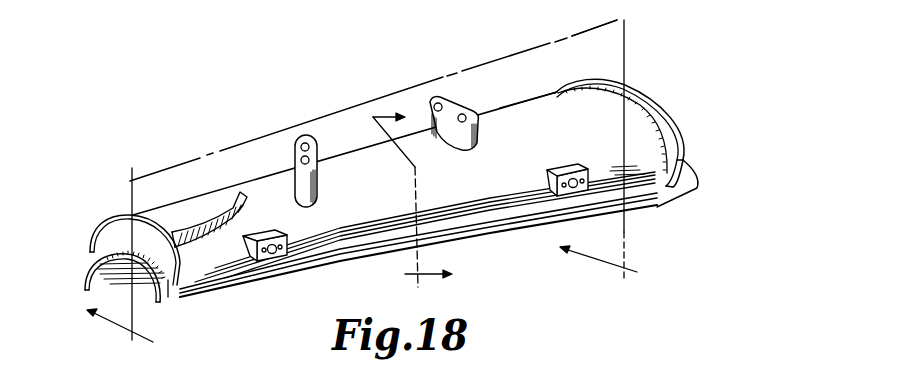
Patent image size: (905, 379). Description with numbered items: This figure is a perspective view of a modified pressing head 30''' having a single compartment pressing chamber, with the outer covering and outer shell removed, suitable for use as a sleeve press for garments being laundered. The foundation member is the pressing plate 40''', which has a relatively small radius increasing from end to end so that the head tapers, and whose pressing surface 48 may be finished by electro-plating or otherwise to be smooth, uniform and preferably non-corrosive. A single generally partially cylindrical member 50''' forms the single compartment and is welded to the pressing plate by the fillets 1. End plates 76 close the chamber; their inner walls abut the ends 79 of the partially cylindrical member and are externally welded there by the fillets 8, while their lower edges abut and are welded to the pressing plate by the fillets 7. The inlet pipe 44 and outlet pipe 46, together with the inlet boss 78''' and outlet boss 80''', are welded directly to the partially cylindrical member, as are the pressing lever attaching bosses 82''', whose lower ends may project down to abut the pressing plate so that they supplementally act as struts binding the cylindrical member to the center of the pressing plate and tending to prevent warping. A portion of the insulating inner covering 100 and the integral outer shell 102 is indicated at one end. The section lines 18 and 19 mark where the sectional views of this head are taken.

The fillets 1 is at (220, 270).
The external fillets 7 is at (170, 283).
The external fillets 8 is at (672, 140).
The section line 18 is at (423, 195).
The section line 19 is at (348, 181).
The pressing head 30''' is at (634, 46).
The pressing plate 40''' is at (654, 196).
The inlet pipe 44 is at (578, 197).
The outlet pipe 46 is at (278, 259).
The pressing surface 48 is at (112, 280).
The partially cylindrical member 50''' is at (529, 89).
The end plates 76 is at (112, 232).
The inlet boss 78''' is at (261, 271).
The ends 79 is at (652, 117).
The outlet boss 80''' is at (545, 208).
The pressing lever attaching bosses 82''' is at (401, 146).
The insulating inner covering 100 is at (226, 206).
The outer shell 102 is at (188, 208).